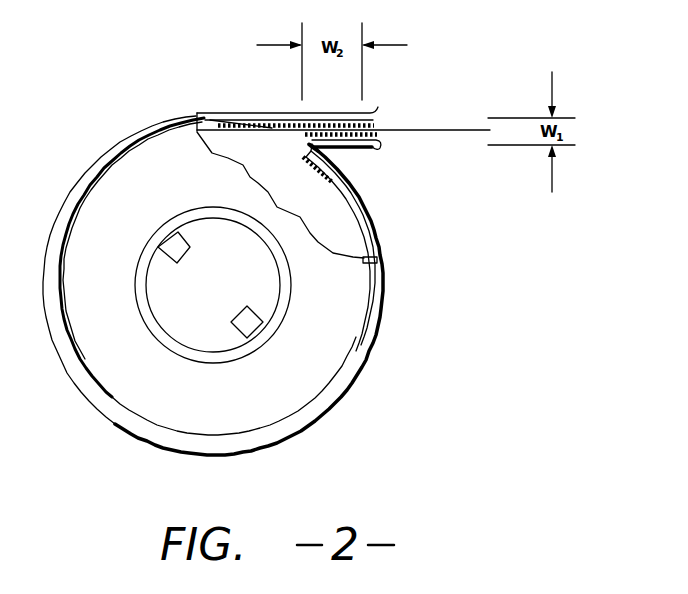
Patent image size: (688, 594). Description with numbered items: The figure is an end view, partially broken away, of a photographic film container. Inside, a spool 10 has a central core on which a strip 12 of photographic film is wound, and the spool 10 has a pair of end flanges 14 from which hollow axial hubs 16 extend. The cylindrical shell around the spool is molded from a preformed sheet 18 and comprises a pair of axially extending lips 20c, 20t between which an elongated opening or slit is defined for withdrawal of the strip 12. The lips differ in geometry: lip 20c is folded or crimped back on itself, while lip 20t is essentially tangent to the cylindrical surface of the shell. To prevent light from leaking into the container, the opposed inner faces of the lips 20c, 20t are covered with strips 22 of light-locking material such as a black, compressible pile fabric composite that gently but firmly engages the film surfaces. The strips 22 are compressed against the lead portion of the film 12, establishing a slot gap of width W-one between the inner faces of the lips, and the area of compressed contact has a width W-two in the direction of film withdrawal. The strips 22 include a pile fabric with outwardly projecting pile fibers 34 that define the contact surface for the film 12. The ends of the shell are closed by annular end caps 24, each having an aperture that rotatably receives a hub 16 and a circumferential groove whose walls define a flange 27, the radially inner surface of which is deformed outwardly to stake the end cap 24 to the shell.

The spool 10 is at (230, 292).
The strip of photographic film 12 is at (462, 130).
The end flanges 14 is at (340, 237).
The hollow axial hubs 16 is at (300, 277).
The preformed sheet 18 is at (362, 114).
The lip 20t is at (292, 112).
The lip 20c is at (363, 160).
The strips of light-locking material 22 is at (382, 143).
The annular end caps 24 is at (323, 327).
The flange 27 is at (338, 392).
The pile fibers 34 is at (383, 126).